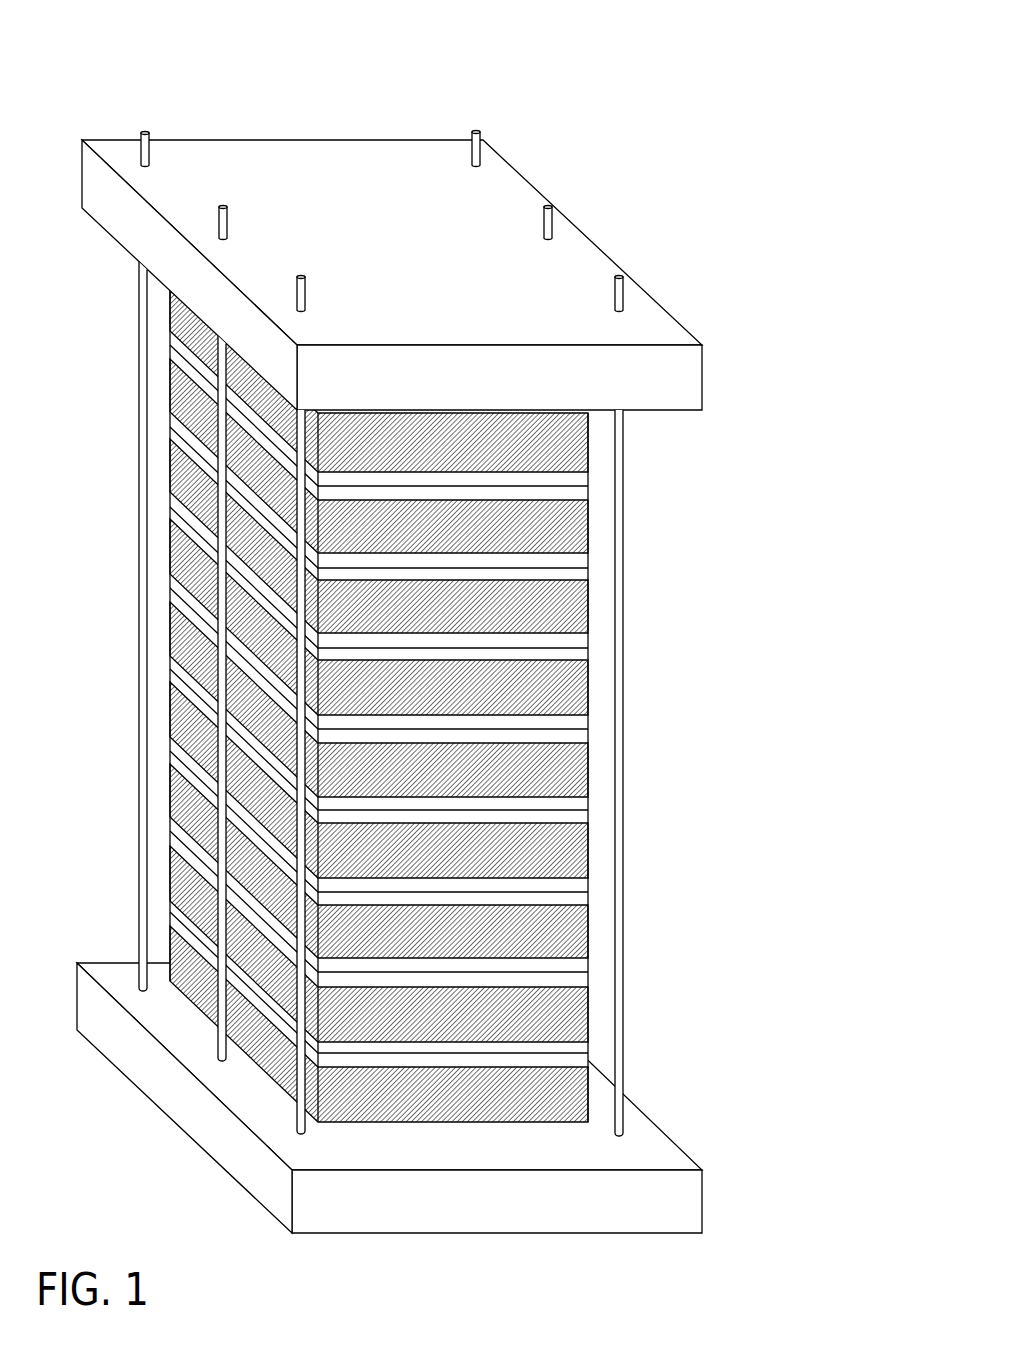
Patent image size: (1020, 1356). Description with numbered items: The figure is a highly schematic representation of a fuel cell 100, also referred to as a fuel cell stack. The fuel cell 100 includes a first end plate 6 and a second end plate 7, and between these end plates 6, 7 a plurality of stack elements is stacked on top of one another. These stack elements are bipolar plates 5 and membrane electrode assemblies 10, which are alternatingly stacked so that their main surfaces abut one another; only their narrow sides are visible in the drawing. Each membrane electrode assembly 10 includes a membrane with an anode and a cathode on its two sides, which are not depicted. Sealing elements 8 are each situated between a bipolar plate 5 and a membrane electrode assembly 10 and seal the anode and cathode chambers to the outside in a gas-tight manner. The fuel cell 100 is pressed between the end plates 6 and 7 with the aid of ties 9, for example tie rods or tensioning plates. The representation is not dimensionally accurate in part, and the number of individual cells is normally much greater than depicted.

The fuel cell 100 is at (389, 616).
The bipolar plate 5 is at (183, 463).
The first end plate 6 is at (163, 1079).
The second end plate 7 is at (269, 162).
The sealing element 8 is at (178, 509).
The tie 9 is at (146, 345).
The membrane electrode assembly 10 is at (196, 534).